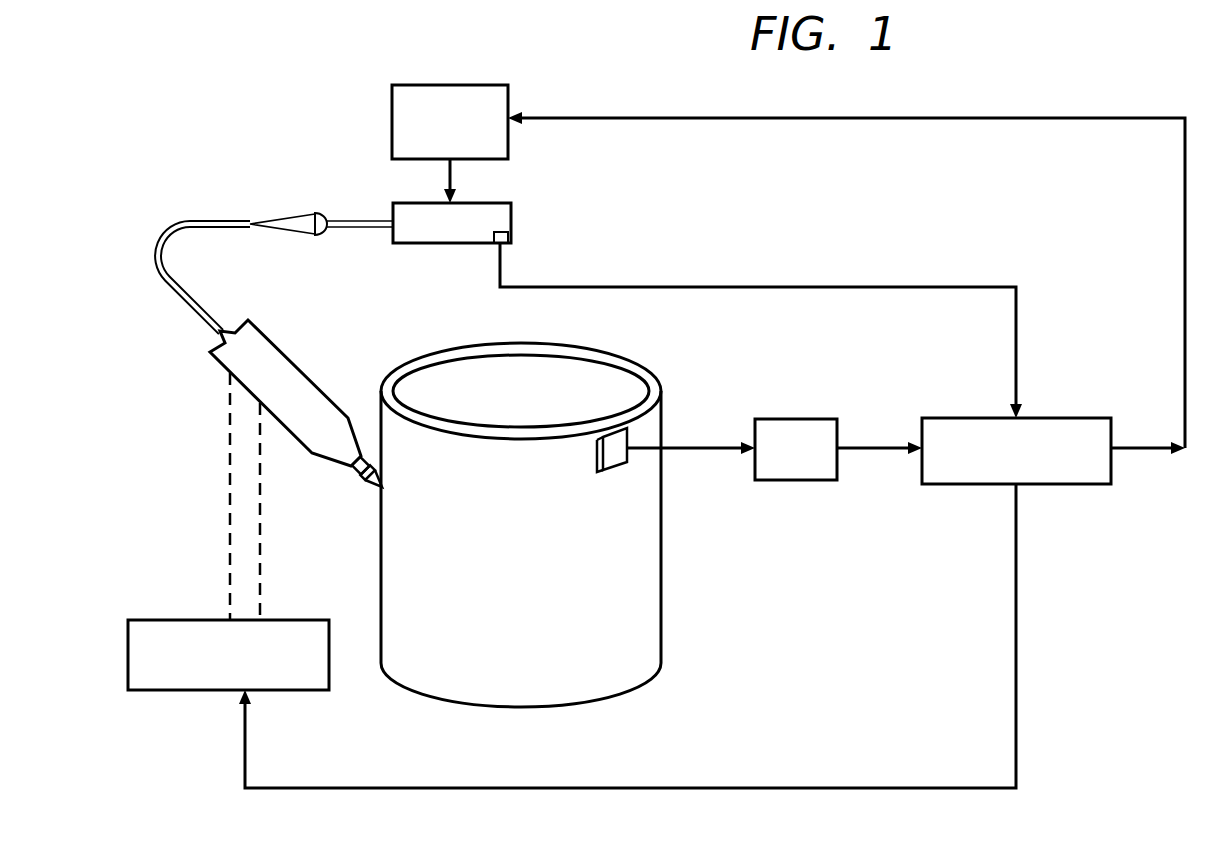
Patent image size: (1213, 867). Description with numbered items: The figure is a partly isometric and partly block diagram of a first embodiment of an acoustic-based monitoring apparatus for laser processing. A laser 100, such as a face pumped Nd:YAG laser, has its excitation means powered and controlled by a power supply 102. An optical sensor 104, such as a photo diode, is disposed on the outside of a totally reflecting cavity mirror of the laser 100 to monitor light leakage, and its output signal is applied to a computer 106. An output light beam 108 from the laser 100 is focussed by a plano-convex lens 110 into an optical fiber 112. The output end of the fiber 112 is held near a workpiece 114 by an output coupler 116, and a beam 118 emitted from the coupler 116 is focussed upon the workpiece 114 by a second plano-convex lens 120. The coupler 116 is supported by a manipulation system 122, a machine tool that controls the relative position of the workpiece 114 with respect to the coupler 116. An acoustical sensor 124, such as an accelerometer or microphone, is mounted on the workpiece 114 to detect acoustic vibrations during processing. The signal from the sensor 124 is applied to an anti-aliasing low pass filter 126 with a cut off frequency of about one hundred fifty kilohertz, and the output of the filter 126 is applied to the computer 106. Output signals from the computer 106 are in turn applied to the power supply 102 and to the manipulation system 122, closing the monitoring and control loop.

The laser 100 is at (846, 280).
The power supply 102 is at (392, 112).
The optical sensor 104 is at (512, 235).
The computer 106 is at (1075, 418).
The output light beam 108 is at (360, 217).
The plano-convex lens 110 is at (315, 212).
The optical fiber 112 is at (192, 220).
The workpiece 114 is at (633, 360).
The output coupler 116 is at (223, 368).
The beam 118 is at (360, 465).
The plano-convex lens 120 is at (372, 484).
The manipulation system 122 is at (172, 617).
The acoustical sensor 124 is at (613, 470).
The anti-aliasing low pass filter 126 is at (770, 418).